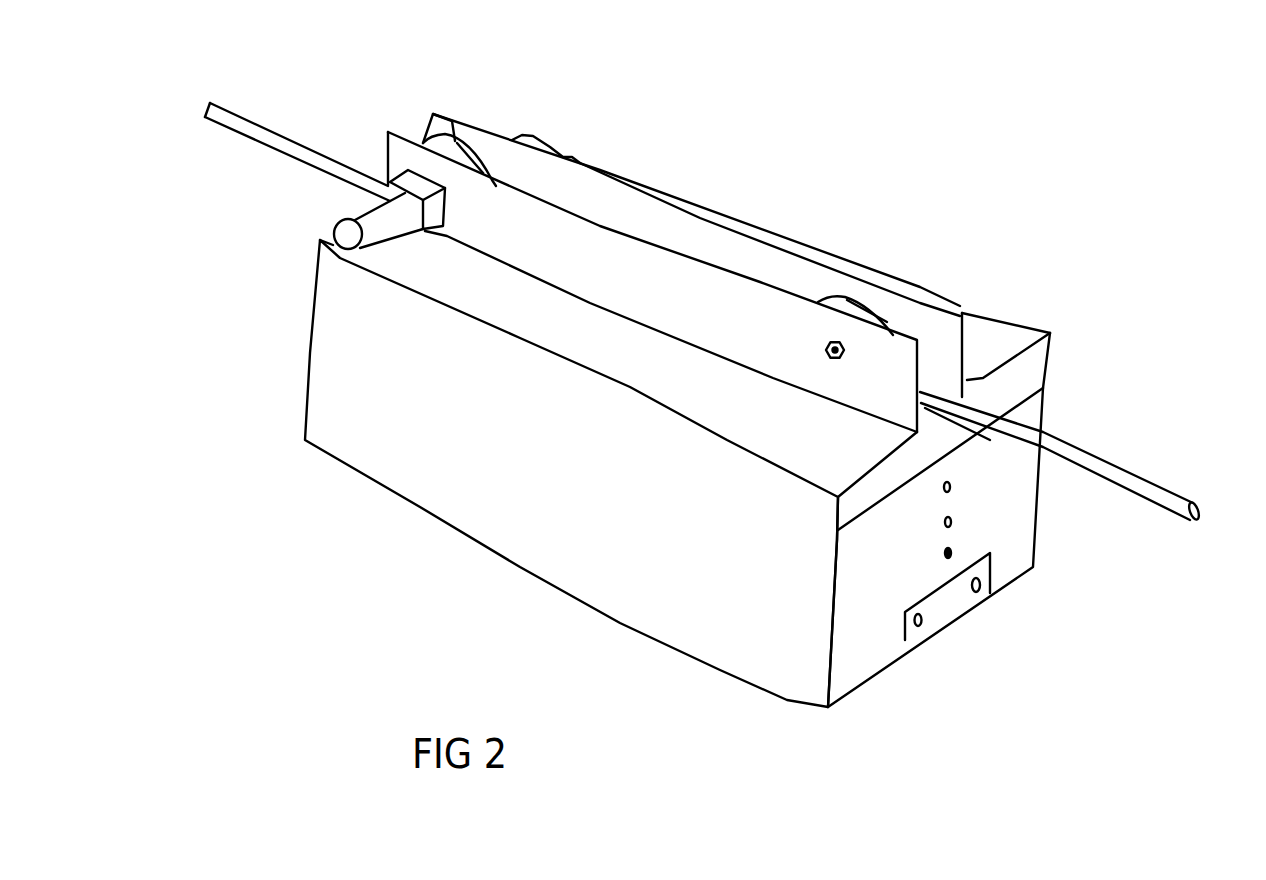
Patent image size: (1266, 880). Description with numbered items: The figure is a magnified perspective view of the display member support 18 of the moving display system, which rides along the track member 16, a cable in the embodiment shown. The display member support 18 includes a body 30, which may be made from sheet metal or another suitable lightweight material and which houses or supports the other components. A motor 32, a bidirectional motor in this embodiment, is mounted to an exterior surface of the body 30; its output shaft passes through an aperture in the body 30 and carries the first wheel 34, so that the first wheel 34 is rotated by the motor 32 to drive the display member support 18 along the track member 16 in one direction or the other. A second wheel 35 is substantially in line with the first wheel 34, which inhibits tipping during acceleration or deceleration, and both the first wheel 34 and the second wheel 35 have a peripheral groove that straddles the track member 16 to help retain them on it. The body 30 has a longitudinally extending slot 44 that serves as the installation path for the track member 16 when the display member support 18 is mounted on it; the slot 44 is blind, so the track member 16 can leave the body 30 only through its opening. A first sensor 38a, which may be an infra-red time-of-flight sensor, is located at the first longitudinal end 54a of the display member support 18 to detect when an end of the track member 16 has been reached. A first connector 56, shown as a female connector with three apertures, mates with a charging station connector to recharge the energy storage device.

The track member 16 is at (244, 123).
The display member support 18 is at (948, 188).
The body 30 is at (403, 462).
The motor 32 is at (347, 214).
The first wheel 34 is at (450, 140).
The second wheel 35 is at (848, 295).
The first sensor 38a is at (957, 605).
The slot 44 is at (967, 380).
The first longitudinal end 54a is at (870, 640).
The first connector 56 is at (973, 487).